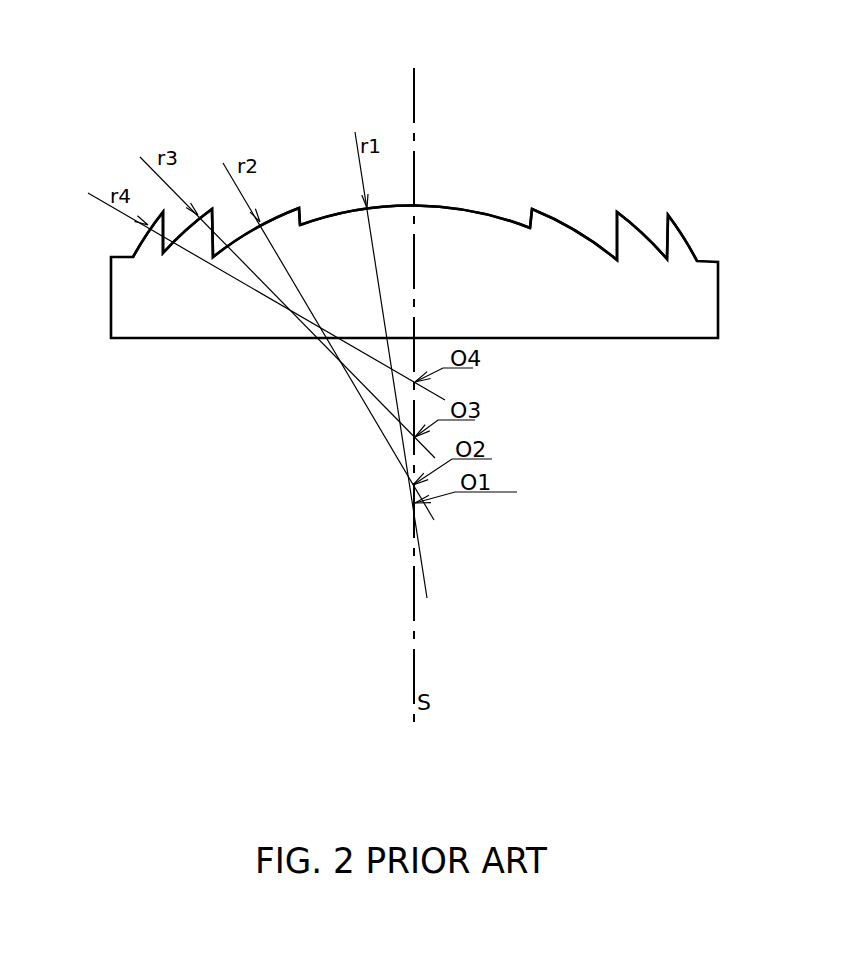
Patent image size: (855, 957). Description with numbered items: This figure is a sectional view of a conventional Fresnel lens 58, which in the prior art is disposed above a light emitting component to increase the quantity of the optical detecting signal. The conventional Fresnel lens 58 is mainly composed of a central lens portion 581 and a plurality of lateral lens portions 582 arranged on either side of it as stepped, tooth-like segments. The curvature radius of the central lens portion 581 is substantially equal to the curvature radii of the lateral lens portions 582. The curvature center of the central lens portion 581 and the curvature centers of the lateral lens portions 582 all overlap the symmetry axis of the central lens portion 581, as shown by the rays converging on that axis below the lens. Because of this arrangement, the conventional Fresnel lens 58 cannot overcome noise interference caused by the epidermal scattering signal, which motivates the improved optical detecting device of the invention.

The conventional Fresnel lens 58 is at (389, 185).
The central lens portion 581 is at (473, 223).
The lateral lens portions 582 is at (147, 226).